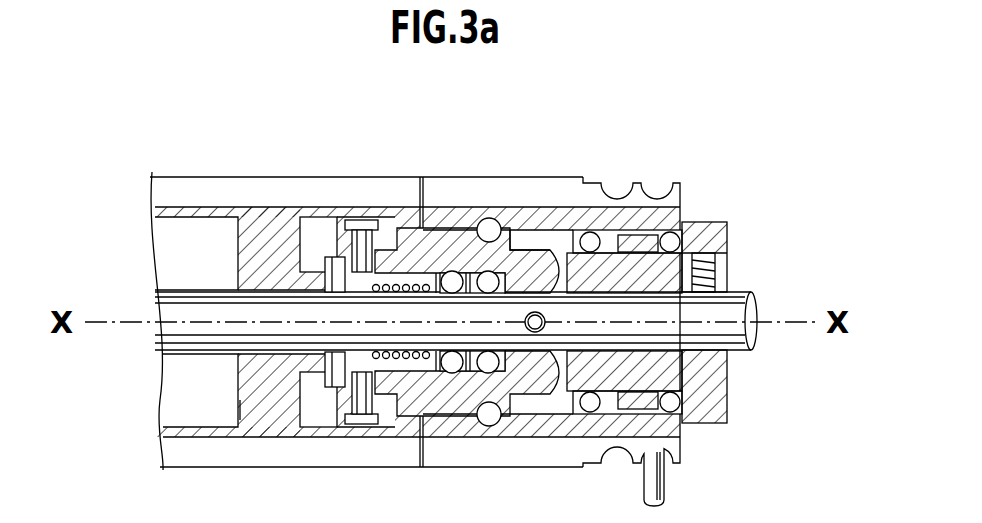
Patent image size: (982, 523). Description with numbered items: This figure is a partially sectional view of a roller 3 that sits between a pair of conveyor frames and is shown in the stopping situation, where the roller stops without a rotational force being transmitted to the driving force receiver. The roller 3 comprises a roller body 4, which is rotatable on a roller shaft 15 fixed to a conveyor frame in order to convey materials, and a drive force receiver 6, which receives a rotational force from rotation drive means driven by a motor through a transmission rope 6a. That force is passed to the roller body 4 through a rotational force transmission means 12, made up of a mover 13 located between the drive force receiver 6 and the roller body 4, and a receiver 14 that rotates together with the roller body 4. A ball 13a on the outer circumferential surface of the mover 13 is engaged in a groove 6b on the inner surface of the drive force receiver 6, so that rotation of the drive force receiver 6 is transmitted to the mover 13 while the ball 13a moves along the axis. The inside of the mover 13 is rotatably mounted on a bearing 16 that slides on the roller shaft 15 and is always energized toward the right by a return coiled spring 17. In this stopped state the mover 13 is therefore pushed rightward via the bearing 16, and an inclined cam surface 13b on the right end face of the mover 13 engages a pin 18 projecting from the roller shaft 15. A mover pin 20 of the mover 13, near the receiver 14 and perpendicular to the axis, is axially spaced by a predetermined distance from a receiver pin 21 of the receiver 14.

The roller 3 is at (437, 177).
The roller body 4 is at (189, 178).
The drive force receiver 6 is at (521, 185).
The transmission rope 6a is at (664, 484).
The groove 6b is at (466, 220).
The rotational force transmission means 12 is at (357, 213).
The mover 13 is at (401, 414).
The ball 13a is at (510, 213).
The inclined cam surface 13b is at (588, 250).
The receiver 14 is at (265, 420).
The roller shaft 15 is at (748, 350).
The bearing 16 is at (482, 374).
The return coiled spring 17 is at (370, 396).
The pin 18 is at (537, 334).
The mover pin 20 is at (388, 227).
The receiver pin 21 is at (332, 253).